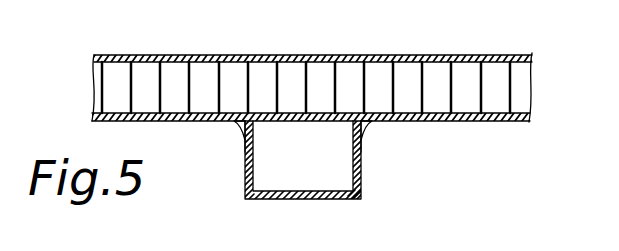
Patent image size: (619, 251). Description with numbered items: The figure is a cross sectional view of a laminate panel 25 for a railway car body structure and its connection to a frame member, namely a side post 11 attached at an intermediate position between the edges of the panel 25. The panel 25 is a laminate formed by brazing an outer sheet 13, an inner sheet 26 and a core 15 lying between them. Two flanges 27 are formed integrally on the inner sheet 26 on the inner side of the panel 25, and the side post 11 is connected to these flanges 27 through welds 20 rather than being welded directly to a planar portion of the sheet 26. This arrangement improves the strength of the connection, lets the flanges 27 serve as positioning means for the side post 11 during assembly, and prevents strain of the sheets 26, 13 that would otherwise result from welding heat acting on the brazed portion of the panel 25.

The side post 11 is at (312, 200).
The outer sheet 13 is at (342, 86).
The core web 15 is at (515, 84).
The welds 20 is at (240, 145).
The panel 25 is at (121, 53).
The inner sheet 26 is at (496, 122).
The flanges 27 is at (236, 127).